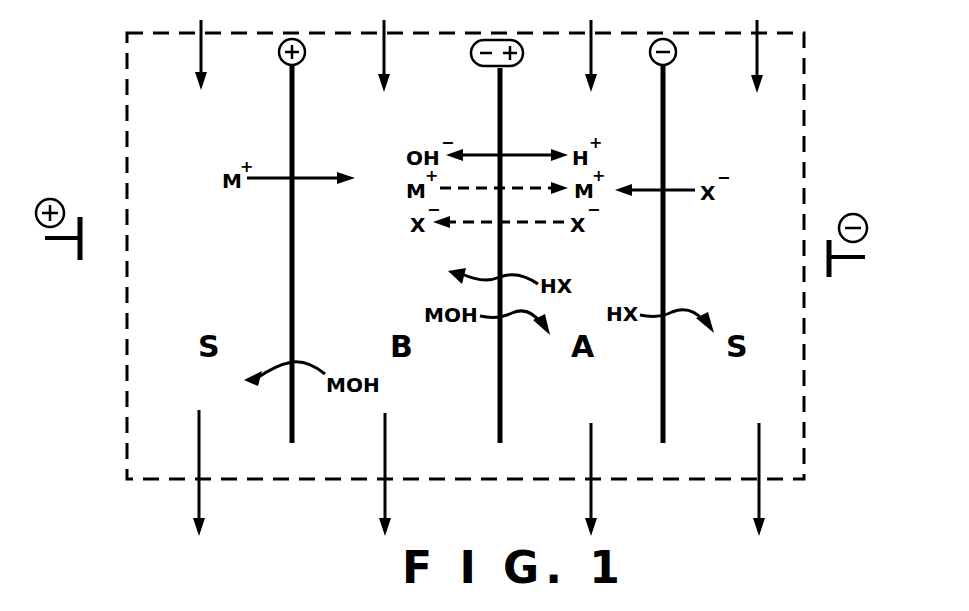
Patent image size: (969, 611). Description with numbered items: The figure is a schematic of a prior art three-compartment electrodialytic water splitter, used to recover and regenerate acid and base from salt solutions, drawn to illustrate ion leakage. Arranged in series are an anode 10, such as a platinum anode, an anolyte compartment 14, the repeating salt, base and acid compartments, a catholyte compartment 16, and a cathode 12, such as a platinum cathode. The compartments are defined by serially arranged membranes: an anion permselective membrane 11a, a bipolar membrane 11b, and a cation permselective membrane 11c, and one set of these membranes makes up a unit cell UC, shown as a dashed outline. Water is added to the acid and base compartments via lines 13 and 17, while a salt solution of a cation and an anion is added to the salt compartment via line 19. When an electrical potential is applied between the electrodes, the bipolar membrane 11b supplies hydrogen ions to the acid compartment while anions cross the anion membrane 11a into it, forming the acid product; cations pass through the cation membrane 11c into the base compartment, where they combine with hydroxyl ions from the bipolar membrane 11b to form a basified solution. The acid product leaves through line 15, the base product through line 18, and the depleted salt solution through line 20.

The anode 10 is at (64, 240).
The anion permselective membrane 11a is at (666, 104).
The bipolar membrane 11b is at (503, 108).
The cation permselective membrane 11c is at (286, 108).
The cathode 12 is at (848, 262).
The line 13 is at (594, 46).
The anolyte compartment 14 is at (103, 207).
The line 15 is at (588, 493).
The catholyte compartment 16 is at (815, 237).
The line 17 is at (387, 46).
The line 18 is at (382, 492).
The line 19 is at (481, 46).
The line 20 is at (196, 488).
The unit cell UC is at (803, 63).